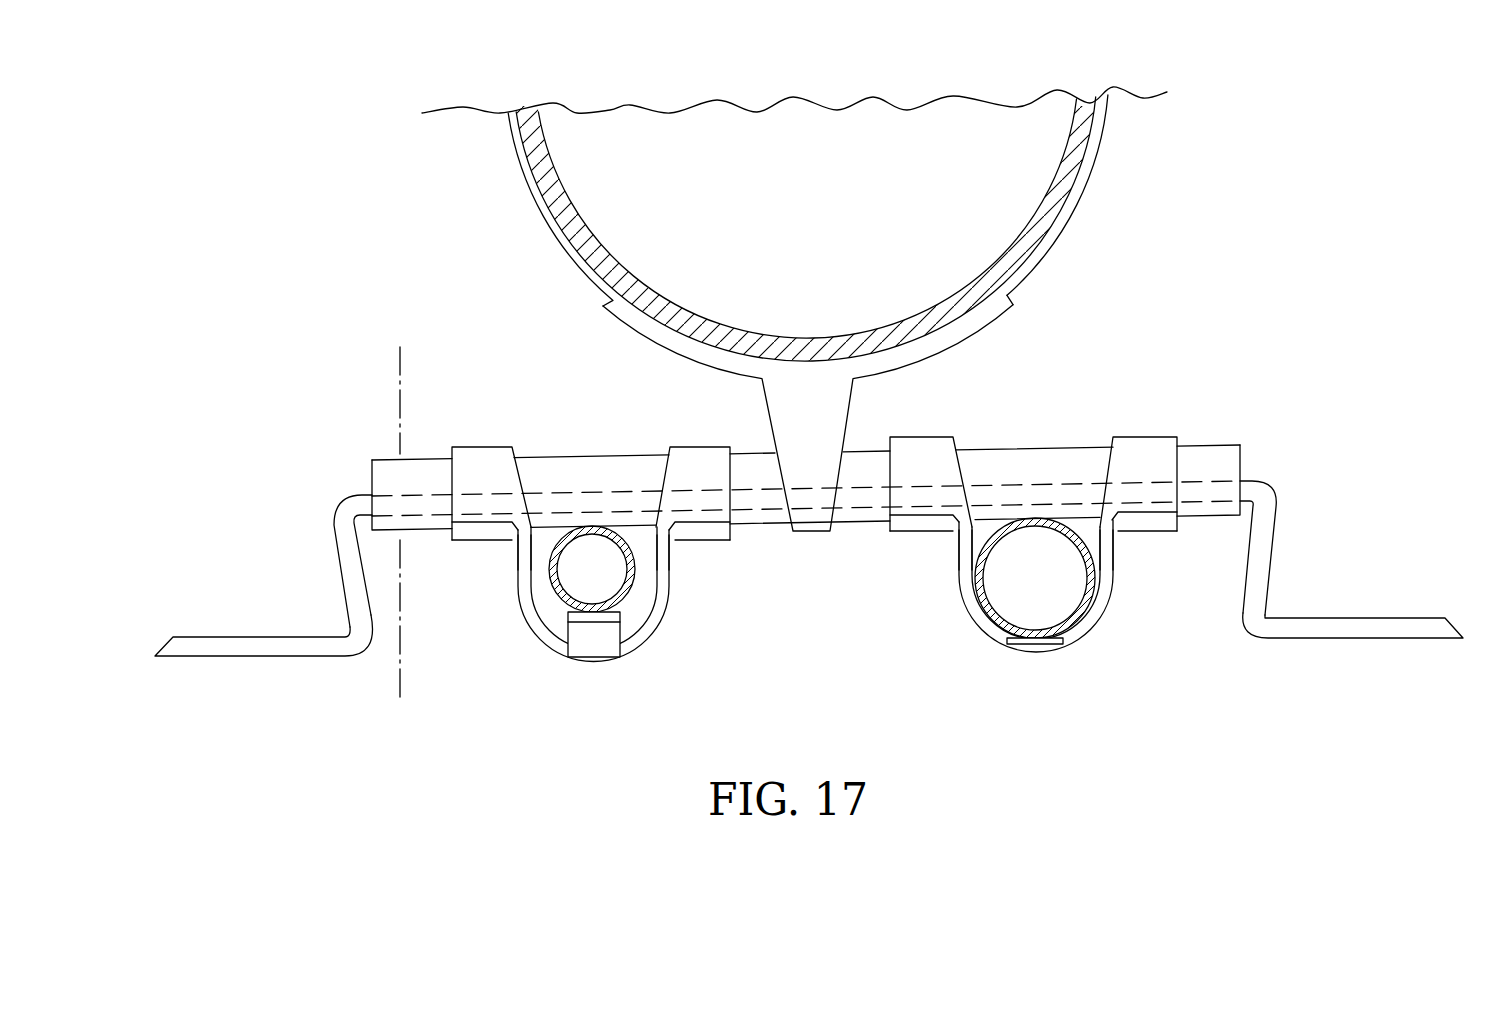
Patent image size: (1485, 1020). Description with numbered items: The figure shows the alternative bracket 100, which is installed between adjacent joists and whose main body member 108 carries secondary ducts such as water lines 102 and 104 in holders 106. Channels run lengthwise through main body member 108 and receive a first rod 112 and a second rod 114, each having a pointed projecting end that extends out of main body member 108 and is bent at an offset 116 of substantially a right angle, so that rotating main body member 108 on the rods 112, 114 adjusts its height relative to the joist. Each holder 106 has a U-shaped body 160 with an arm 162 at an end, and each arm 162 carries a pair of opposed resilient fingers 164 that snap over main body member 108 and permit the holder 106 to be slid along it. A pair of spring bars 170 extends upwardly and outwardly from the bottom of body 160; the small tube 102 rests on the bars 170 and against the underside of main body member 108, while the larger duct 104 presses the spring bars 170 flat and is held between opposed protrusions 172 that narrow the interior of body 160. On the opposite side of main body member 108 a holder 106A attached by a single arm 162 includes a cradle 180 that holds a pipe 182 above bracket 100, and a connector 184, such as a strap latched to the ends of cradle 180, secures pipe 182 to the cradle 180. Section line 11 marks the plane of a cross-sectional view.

The bracket 100 is at (1303, 406).
The water line 102 is at (625, 595).
The water line 104 is at (1090, 603).
The holder 106 is at (769, 620).
The holder 106A is at (997, 324).
The main body member 108 is at (858, 517).
The first rod 112 is at (1268, 497).
The second rod 114 is at (348, 513).
The offset 116 is at (348, 567).
The U-shaped body 160 is at (512, 617).
The arm 162 is at (672, 443).
The resilient finger 164 is at (708, 457).
The spring bar 170 is at (588, 637).
The protrusion 172 is at (532, 572).
The cradle 180 is at (653, 339).
The pipe 182 is at (1073, 168).
The connector 184 is at (523, 168).
The section line 11 is at (446, 700).